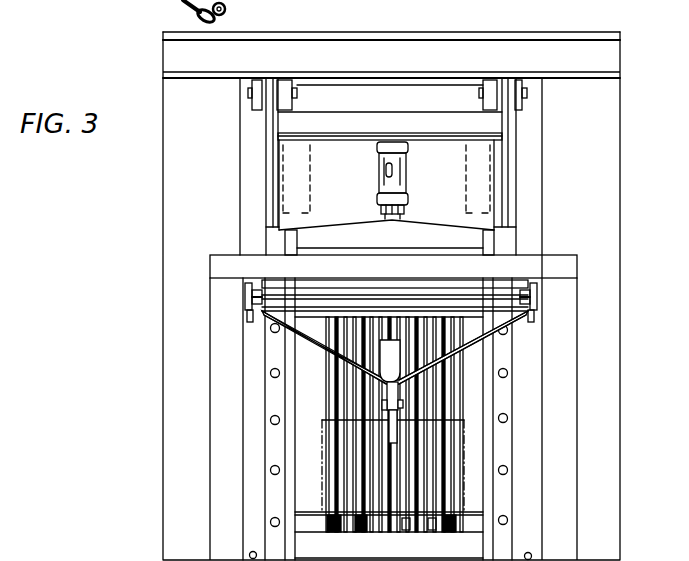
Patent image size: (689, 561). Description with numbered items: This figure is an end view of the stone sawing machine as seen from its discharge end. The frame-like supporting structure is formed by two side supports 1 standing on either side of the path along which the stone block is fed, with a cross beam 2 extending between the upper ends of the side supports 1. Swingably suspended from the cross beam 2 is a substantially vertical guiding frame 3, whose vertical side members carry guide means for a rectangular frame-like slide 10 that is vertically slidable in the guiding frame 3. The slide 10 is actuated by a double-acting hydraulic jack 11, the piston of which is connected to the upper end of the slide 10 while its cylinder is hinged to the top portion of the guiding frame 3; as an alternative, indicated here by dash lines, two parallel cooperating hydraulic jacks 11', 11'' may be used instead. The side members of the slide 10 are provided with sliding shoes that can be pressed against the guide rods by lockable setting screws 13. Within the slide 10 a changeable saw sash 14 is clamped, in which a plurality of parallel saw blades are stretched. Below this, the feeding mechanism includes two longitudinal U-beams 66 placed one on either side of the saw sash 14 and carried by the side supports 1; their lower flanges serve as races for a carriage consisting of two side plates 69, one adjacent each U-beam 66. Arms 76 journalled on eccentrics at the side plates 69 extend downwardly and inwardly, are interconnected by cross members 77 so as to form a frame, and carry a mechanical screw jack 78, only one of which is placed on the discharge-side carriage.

The side support 1 is at (188, 197).
The cross beam 2 is at (578, 58).
The guiding frame 3 is at (510, 192).
The slide 10 is at (342, 237).
The hydraulic jack 11 is at (410, 180).
The hydraulic jacks 11' is at (463, 179).
The hydraulic jacks 11'' is at (316, 179).
The lockable setting screws 13 is at (272, 465).
The saw sash 14 is at (487, 407).
The U-beams 66 is at (245, 298).
The side plates 69 is at (528, 325).
The arms 76 is at (323, 361).
The cross members 77 is at (327, 338).
The mechanical screw jacks 78 is at (392, 356).